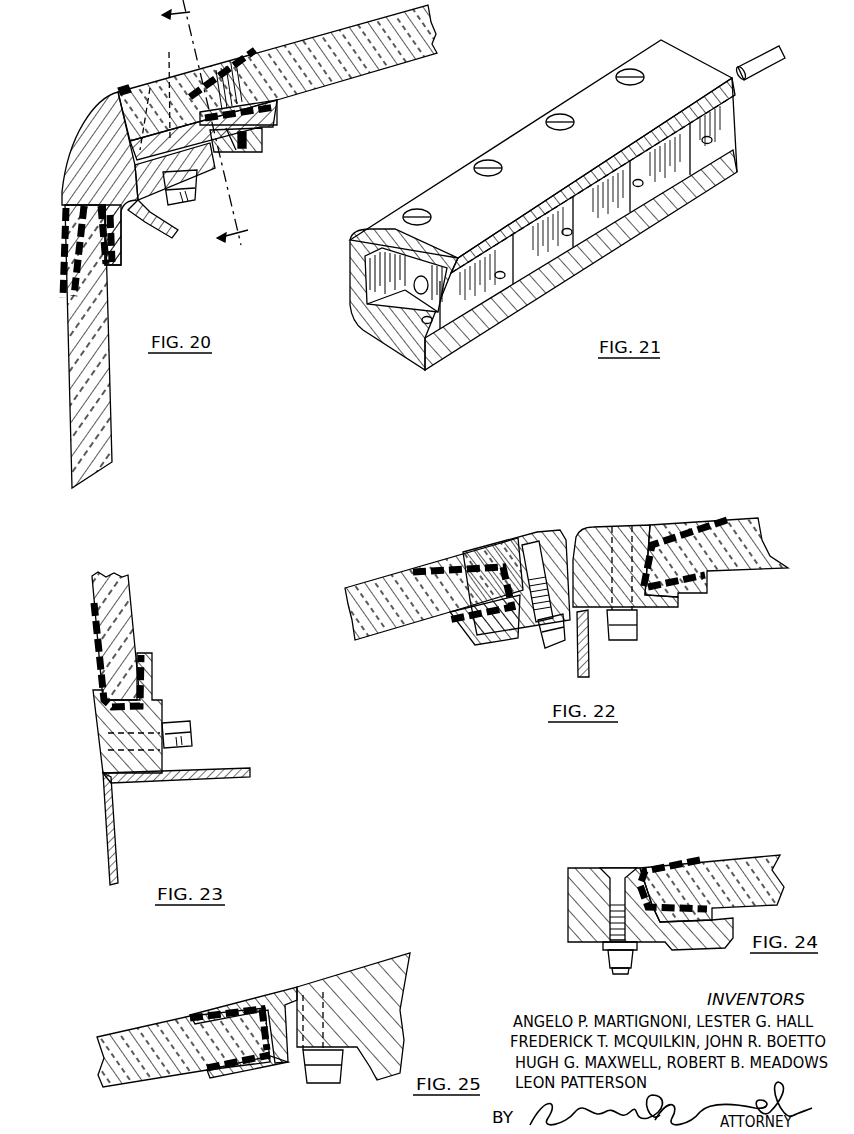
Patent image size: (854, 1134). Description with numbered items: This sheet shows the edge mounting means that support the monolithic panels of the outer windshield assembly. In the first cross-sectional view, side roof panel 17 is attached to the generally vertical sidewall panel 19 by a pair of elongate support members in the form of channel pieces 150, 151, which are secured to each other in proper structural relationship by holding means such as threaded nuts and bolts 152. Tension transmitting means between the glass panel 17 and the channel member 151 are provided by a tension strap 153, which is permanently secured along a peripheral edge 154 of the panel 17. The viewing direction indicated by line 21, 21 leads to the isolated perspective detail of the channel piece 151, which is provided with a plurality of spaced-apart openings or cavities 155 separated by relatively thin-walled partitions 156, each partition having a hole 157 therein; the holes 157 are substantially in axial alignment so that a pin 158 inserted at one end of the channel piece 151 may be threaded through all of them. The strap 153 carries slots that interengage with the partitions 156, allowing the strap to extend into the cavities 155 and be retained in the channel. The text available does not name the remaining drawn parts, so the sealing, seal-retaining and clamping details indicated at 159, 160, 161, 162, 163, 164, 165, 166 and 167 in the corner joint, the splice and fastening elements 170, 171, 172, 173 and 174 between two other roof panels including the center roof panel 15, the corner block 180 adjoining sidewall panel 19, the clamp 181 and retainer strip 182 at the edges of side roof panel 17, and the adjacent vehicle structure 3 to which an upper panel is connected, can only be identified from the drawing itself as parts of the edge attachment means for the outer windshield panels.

In FIG. 25, the vehicle structure 3 is at (400, 1023).
In FIG. 22, the center roof panel 15 is at (760, 517).
In FIG. 20, the side roof panel 17 is at (422, 62).
In FIG. 22, the side roof panel 17 is at (400, 617).
In FIG. 24, the side roof panel 17 is at (760, 857).
In FIG. 25, the side roof panel 17 is at (103, 1090).
In FIG. 20, the sidewall panel 19 is at (73, 443).
In FIG. 23, the sidewall panel 19 is at (127, 613).
In FIG. 20, the line 21— 21 is at (155, 25).
In FIG. 20, the channel piece 150 is at (82, 147).
In FIG. 21, the channel piece 150 is at (494, 320).
In FIG. 20, the channel piece 151 is at (207, 77).
In FIG. 21, the channel piece 151 is at (670, 53).
In FIG. 20, the threaded nuts and bolts 152 is at (147, 83).
In FIG. 21, the threaded nuts and bolts 152 is at (497, 163).
In FIG. 20, the tension strap 153 is at (247, 53).
In FIG. 20, the peripheral edge 154 is at (278, 103).
In FIG. 20, the openings or cavities 155 is at (174, 86).
In FIG. 21, the openings or cavities 155 is at (597, 233).
In FIG. 21, the partitions 156 is at (653, 200).
In FIG. 21, the hole 157 is at (423, 293).
In FIG. 20, the pin 158 is at (118, 92).
In FIG. 21, the pin 158 is at (757, 63).
In FIG. 20, the bolt holes / bolt 159 is at (213, 160).
In FIG. 21, the bolt holes / bolt 159 is at (503, 275).
In FIG. 20, the outer seal 160 is at (65, 247).
In FIG. 20, the lip 161 is at (120, 268).
In FIG. 20, the inner seal 162 is at (80, 225).
In FIG. 20, the sealing compound 163 is at (110, 250).
In FIG. 22, the sealing compound 163 is at (437, 565).
In FIG. 23, the sealing compound 163 is at (108, 692).
In FIG. 24, the sealing compound 163 is at (692, 860).
In FIG. 25, the sealing compound 163 is at (222, 1068).
In FIG. 20, the seal 164 is at (117, 233).
In FIG. 20, the rivet 165 is at (222, 160).
In FIG. 20, the clip 166 is at (277, 123).
In FIG. 20, the bracket 167 is at (240, 150).
In FIG. 22, the splice member 170 is at (473, 540).
In FIG. 22, the splice member 171 is at (660, 522).
In FIG. 22, the bolt 172 is at (530, 532).
In FIG. 22, the bolt 173 is at (620, 530).
In FIG. 22, the fin 174 is at (590, 660).
In FIG. 23, the corner block 180 is at (153, 717).
In FIG. 24, the clamp block 181 is at (643, 863).
In FIG. 25, the retainer strip 182 is at (240, 993).